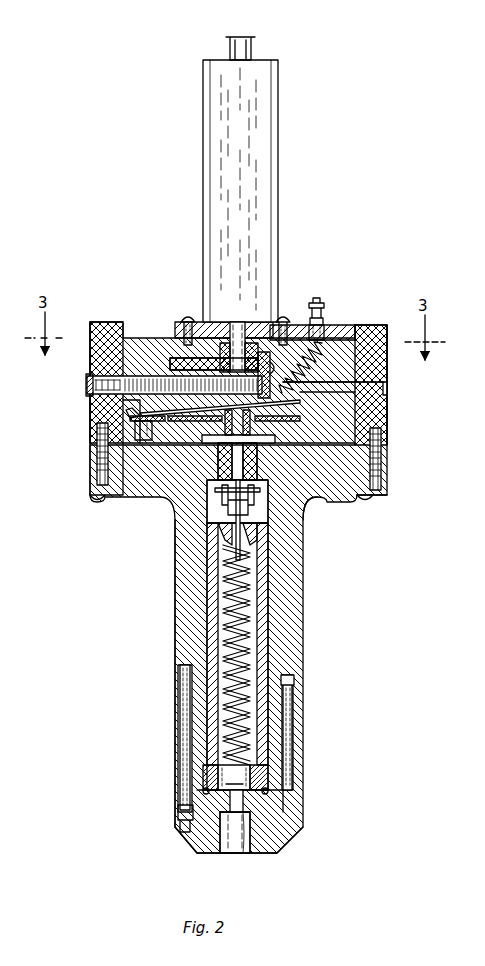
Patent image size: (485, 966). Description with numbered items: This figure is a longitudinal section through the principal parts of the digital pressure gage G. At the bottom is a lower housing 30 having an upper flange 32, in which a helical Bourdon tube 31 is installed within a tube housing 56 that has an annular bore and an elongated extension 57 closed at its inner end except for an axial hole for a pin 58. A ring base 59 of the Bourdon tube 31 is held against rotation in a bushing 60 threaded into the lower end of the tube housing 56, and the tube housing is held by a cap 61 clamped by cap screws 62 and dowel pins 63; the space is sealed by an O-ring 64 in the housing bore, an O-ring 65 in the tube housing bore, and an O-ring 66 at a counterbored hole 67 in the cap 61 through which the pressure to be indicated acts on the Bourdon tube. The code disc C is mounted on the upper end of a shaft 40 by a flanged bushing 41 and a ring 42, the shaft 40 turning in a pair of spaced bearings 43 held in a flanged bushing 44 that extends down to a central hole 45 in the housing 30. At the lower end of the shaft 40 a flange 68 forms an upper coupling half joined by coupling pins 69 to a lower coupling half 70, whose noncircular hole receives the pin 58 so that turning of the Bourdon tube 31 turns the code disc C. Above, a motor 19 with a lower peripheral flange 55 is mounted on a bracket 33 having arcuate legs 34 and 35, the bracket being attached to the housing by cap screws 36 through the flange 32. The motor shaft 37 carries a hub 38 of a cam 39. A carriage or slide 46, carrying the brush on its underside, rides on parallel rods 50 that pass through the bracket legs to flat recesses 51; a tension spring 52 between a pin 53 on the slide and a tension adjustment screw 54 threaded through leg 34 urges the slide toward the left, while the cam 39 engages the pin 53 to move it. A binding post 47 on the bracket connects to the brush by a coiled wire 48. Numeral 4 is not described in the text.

The stem 4 is at (252, 47).
The motor 19 is at (268, 172).
The lower housing 30 is at (305, 588).
The Bourdon tube 31 is at (225, 610).
The upper flange 32 is at (357, 498).
The bracket 33 is at (348, 325).
The arcuate leg 34 is at (90, 352).
The arcuate leg 35 is at (387, 360).
The cap screws 36 is at (97, 500).
The motor shaft 37 is at (247, 335).
The hub 38 is at (221, 342).
The cam 39 is at (182, 362).
The shaft 40 is at (275, 436).
The flanged bushing 41 is at (266, 401).
The ring 42 is at (225, 425).
The bearings 43 is at (212, 458).
The flanged bushing 44 is at (314, 498).
The central hole 45 is at (208, 515).
The slide 46 is at (134, 380).
The binding post 47 is at (320, 304).
The coiled wire 48 is at (300, 370).
The rods 50 is at (381, 430).
The flat recess 51 is at (343, 392).
The tension spring 52 is at (162, 388).
The pin 53 is at (270, 372).
The tension adjustment screw 54 is at (87, 385).
The lower peripheral flange 55 is at (189, 318).
The tube housing 56 is at (178, 720).
The elongated extension 57 is at (262, 610).
The pin 58 is at (212, 540).
The ring base 59 is at (234, 777).
The bushing 60 is at (205, 772).
The cap 61 is at (203, 845).
The cap screws 62 is at (183, 690).
The dowel pins 63 is at (283, 800).
The O-ring 64 is at (292, 700).
The O-ring 65 is at (201, 791).
The O-ring 66 is at (235, 814).
The hole 67 is at (244, 850).
The flange 68 is at (215, 490).
The coupling pins 69 is at (270, 512).
The lower coupling half 70 is at (266, 535).
The code disc C is at (307, 418).
The gage G is at (87, 456).